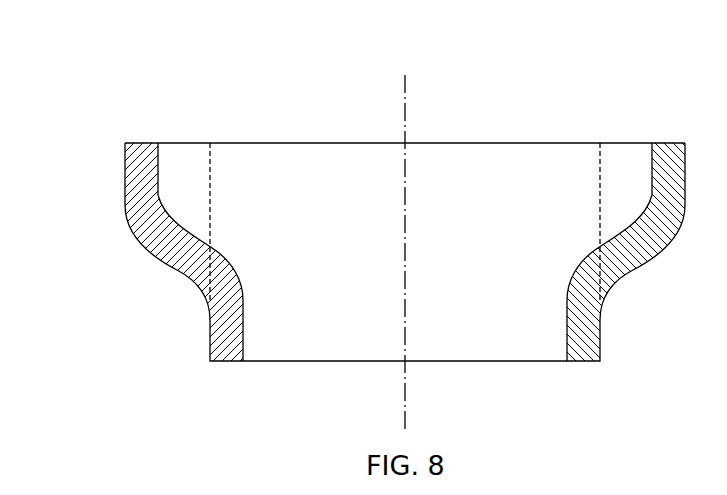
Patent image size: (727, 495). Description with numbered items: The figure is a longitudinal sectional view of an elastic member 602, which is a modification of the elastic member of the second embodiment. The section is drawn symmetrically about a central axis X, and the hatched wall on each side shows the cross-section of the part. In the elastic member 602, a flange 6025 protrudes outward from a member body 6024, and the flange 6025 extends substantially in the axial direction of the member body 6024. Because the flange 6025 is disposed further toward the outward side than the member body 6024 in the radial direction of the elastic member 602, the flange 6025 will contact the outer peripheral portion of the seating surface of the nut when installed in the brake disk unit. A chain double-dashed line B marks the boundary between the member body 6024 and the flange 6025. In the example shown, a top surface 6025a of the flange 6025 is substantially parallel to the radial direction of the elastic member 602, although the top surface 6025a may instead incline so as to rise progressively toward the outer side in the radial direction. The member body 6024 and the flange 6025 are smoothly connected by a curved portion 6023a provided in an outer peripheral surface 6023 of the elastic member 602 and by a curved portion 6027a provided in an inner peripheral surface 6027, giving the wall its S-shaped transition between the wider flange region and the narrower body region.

The elastic member 602 is at (637, 72).
The outer peripheral surface 6023 is at (122, 210).
The curved portion 6023a is at (172, 271).
The member body 6024 is at (228, 353).
The flange 6025 is at (145, 151).
The top surface 6025a is at (313, 143).
The inner peripheral surface 6027 is at (169, 198).
The curved portion 6027a is at (215, 248).
The chain double-dashed line B is at (211, 203).
The central axis X is at (404, 241).